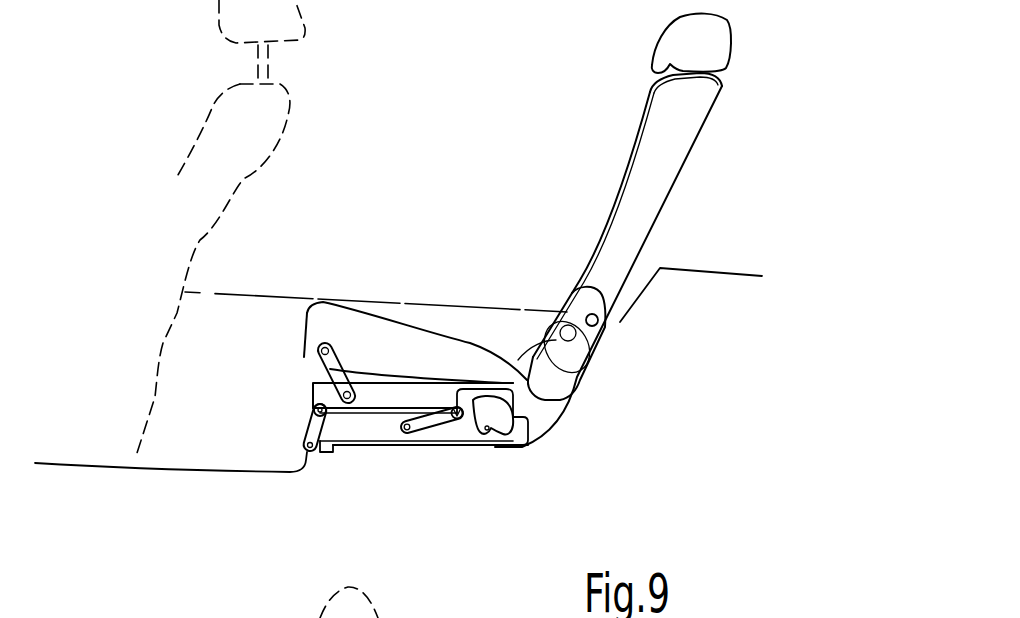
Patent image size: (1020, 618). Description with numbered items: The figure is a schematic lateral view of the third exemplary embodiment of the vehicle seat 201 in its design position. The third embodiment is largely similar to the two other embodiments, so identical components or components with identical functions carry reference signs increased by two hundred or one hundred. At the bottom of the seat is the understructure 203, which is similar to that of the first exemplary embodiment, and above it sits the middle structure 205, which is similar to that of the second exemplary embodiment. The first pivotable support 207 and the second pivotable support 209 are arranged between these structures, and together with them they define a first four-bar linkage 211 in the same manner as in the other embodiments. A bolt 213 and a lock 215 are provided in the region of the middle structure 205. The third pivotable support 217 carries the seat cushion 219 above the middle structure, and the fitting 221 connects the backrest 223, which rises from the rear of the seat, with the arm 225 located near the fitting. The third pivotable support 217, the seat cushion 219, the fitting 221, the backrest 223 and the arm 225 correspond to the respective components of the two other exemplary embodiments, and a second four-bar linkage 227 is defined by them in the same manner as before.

The vehicle seat 201 is at (470, 215).
The understructure 203 is at (363, 428).
The middle structure 205 is at (313, 385).
The first pivotable support 207 is at (307, 423).
The second pivotable support 209 is at (430, 423).
The first four-bar linkage 211 is at (304, 410).
The bolt 213 is at (488, 430).
The lock 215 is at (517, 447).
The third pivotable support 217 is at (330, 369).
The seat cushion 219 is at (373, 338).
The fitting 221 is at (553, 363).
The backrest 223 is at (650, 183).
The arm 225 is at (590, 340).
The second four-bar linkage 227 is at (300, 352).